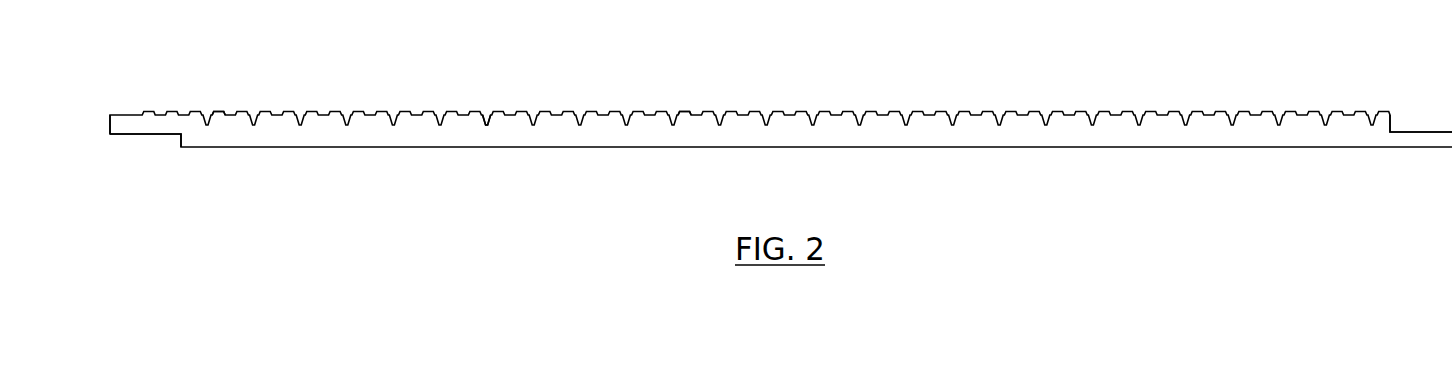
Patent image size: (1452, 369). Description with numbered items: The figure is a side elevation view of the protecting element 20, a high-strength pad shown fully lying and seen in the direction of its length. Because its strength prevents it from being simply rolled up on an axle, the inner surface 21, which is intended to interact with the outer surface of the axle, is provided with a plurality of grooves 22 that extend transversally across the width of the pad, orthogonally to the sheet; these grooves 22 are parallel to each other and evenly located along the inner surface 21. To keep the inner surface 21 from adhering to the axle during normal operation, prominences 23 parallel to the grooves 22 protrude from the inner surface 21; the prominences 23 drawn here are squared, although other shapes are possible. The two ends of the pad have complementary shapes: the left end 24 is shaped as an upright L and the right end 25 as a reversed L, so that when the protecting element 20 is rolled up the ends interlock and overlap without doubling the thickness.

The protecting element 20 is at (318, 138).
The inner surface 21 is at (228, 114).
The grooves 22 is at (486, 115).
The prominences 23 is at (685, 112).
The left end 24 is at (141, 134).
The right end 25 is at (1433, 132).